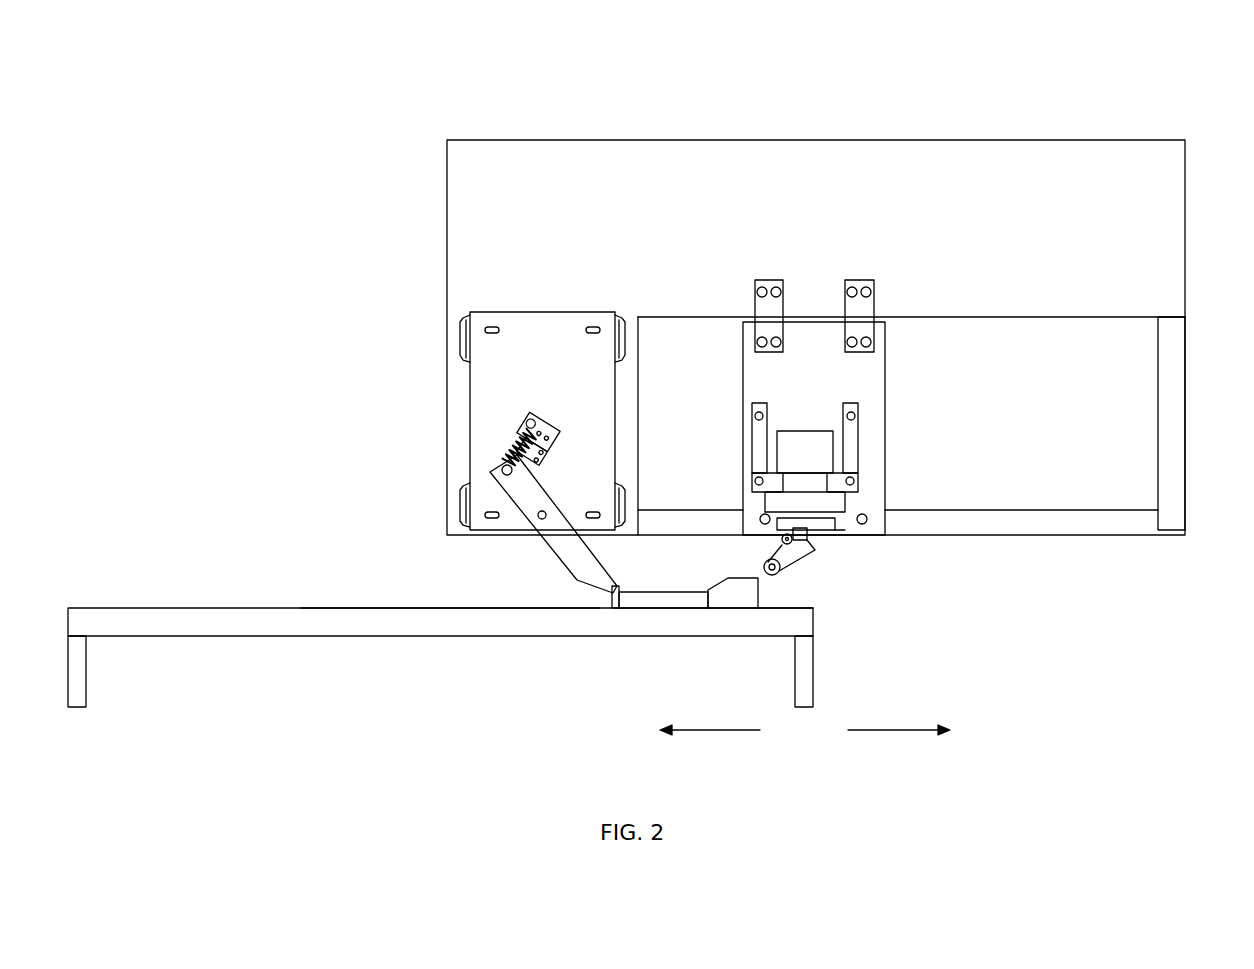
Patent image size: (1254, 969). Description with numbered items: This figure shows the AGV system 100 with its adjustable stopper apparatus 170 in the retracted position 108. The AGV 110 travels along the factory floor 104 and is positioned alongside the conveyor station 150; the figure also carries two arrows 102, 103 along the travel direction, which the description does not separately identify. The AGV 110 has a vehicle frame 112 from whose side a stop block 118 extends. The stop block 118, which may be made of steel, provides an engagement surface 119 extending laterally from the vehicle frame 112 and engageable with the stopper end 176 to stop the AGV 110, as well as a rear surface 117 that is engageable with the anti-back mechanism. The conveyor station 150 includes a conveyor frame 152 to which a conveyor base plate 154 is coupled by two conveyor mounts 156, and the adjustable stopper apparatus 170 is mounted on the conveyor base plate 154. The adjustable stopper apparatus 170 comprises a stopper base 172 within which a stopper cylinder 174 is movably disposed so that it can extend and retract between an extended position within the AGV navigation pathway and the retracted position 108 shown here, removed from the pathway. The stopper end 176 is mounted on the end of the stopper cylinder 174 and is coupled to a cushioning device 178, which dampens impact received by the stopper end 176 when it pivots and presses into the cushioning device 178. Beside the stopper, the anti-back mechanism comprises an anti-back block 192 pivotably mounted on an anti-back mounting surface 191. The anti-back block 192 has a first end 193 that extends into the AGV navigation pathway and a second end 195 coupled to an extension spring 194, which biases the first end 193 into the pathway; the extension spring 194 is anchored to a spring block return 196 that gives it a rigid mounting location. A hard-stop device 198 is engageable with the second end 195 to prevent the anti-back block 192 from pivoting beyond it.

The AGV system 100 is at (899, 86).
The second direction 102 is at (893, 732).
The first direction 103 is at (712, 732).
The factory floor 104 is at (1110, 692).
The retracted position 108 is at (848, 531).
The AGV 110 is at (318, 578).
The vehicle frame 112 is at (450, 607).
The rear surface 117 is at (608, 600).
The stop block 118 is at (665, 597).
The engagement surface 119 is at (762, 597).
The conveyor station 150 is at (1008, 121).
The conveyor frame 152 is at (1185, 217).
The conveyor base plate 154 is at (805, 337).
The conveyor mounts 156 is at (755, 301).
The adjustable stopper apparatus 170 is at (742, 414).
The stopper base 172 is at (805, 430).
The stopper cylinder 174 is at (835, 512).
The stopper end 176 is at (780, 575).
The cushioning device 178 is at (813, 533).
The anti-back mounting surface 191 is at (561, 347).
The anti-back block 192 is at (556, 550).
The first end 193 is at (583, 580).
The extension spring 194 is at (512, 452).
The second end 195 is at (500, 470).
The spring block return 196 is at (545, 425).
The hard-stop device 198 is at (553, 462).